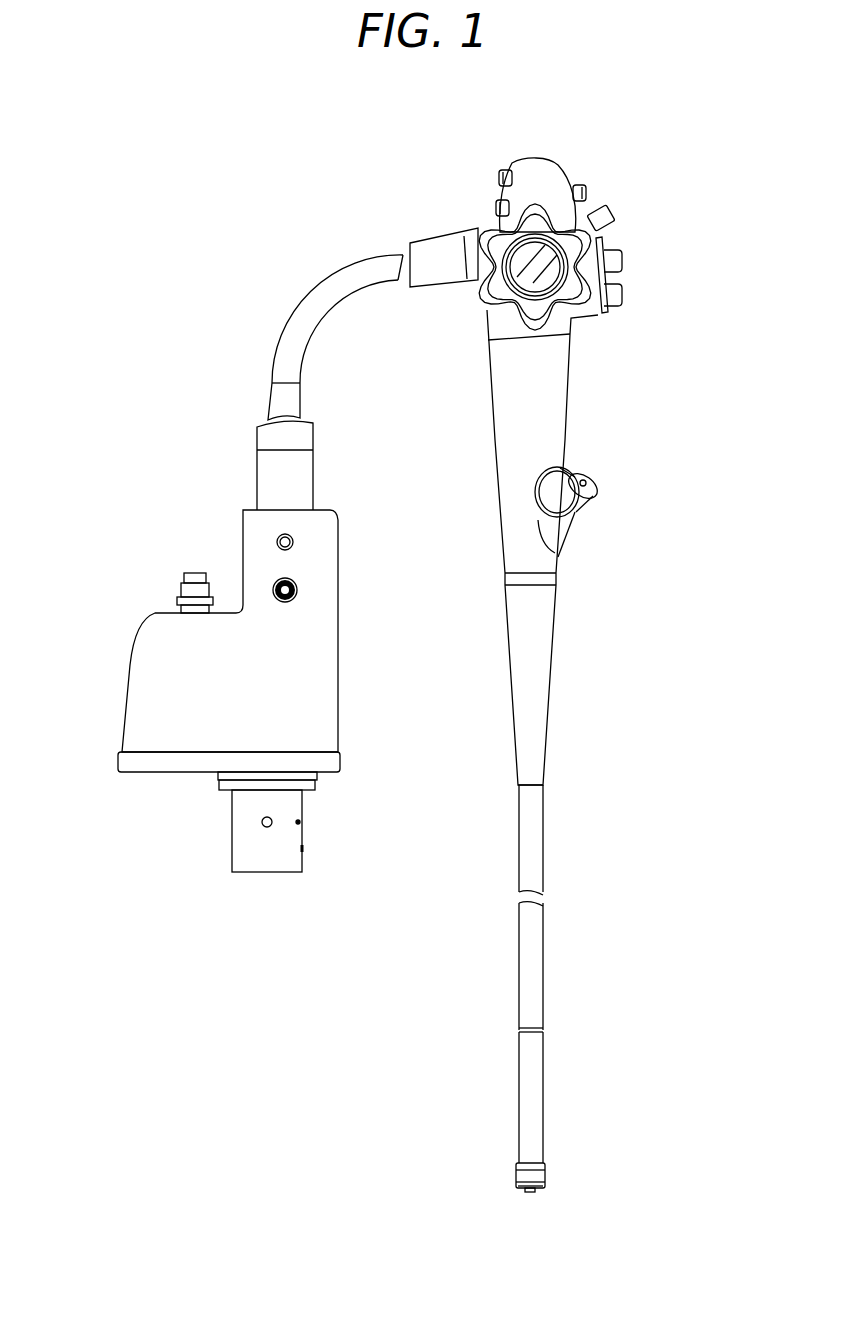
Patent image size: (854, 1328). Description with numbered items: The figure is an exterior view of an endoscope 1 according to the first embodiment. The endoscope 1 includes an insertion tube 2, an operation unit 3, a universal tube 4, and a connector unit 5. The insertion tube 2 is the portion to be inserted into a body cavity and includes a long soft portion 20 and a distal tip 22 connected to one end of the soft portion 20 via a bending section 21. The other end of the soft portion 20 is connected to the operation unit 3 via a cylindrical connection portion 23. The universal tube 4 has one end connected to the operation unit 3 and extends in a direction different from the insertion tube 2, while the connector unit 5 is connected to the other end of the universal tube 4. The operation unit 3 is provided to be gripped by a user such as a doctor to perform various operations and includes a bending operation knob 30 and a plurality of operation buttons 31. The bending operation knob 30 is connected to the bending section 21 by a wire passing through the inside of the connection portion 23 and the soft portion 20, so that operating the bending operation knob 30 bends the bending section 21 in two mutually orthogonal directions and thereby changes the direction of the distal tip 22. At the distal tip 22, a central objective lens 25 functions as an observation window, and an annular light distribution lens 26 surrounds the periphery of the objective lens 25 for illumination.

The endoscope 1 is at (90, 196).
The insertion tube 2 is at (642, 862).
The operation unit 3 is at (622, 160).
The universal tube 4 is at (330, 290).
The connector unit 5 is at (160, 672).
The soft portion 20 is at (552, 787).
The bending section 21 is at (549, 1032).
The distal tip 22 is at (538, 1175).
The connection portion 23 is at (540, 665).
The objective lens 25 is at (530, 1192).
The light distribution lens 26 is at (515, 1188).
The bending operation knob 30 is at (612, 321).
The operation buttons 31 is at (621, 290).